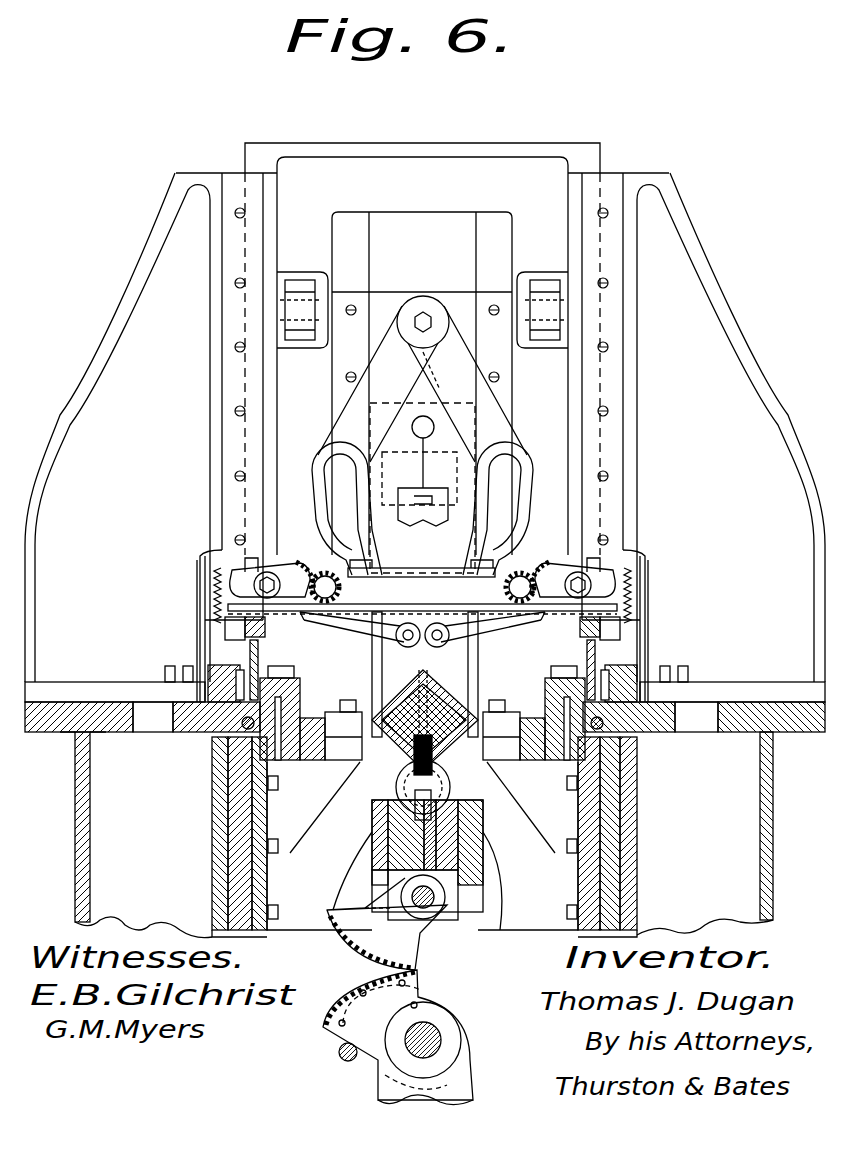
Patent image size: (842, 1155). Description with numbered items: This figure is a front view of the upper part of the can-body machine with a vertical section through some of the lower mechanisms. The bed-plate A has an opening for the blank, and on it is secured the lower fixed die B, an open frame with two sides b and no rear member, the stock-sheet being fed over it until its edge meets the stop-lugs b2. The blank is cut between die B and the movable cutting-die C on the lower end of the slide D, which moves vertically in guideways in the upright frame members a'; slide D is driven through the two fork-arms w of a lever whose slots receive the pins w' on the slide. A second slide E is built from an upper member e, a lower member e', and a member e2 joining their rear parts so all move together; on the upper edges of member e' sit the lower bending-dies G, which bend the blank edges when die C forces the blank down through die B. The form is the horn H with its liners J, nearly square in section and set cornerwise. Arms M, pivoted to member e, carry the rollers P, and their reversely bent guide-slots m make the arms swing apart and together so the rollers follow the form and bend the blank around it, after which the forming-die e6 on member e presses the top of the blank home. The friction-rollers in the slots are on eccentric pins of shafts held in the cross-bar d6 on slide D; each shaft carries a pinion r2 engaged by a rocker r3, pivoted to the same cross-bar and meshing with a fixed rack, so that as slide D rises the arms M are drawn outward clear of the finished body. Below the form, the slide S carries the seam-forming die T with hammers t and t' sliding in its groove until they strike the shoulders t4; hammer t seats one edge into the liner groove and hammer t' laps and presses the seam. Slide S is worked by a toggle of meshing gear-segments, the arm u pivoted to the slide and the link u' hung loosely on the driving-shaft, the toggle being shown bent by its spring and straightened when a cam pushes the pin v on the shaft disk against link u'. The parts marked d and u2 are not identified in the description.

The bed-plate A is at (460, 1090).
The upright frame members a' is at (422, 396).
The lower fixed die B is at (205, 662).
The sides of fixed die b is at (240, 657).
The stop-lugs b2 is at (285, 660).
The movable cutting-die C is at (422, 665).
The slide D is at (422, 572).
The guide d is at (543, 292).
The cross-bar d6 is at (415, 555).
The slide E is at (405, 306).
The upper slide member e is at (422, 488).
The forming-die e6 is at (423, 507).
The connecting slide member e2 is at (372, 660).
The lower slide member e' is at (422, 846).
The lower bending-dies G is at (362, 695).
The horn H is at (412, 692).
The liners J is at (440, 690).
The arms M is at (422, 384).
The guide-slots m is at (422, 508).
The rollers P is at (435, 624).
The pinion r2 is at (510, 613).
The rocker r3 is at (540, 568).
The slide S is at (483, 847).
The seam-forming die T is at (432, 905).
The hammer t is at (410, 787).
The hammer t' is at (445, 791).
The shoulders t4 is at (395, 866).
The toggle-arm u is at (387, 924).
The toggle-arm u' is at (398, 1037).
The slot u2 is at (390, 1084).
The pin v is at (348, 1062).
The fork-arms w is at (422, 310).
The pins w' is at (300, 337).